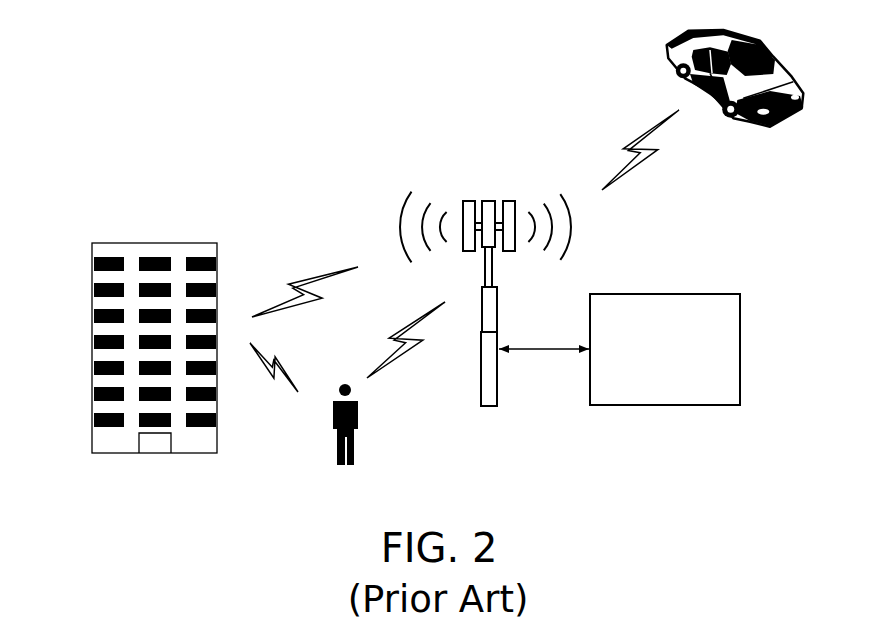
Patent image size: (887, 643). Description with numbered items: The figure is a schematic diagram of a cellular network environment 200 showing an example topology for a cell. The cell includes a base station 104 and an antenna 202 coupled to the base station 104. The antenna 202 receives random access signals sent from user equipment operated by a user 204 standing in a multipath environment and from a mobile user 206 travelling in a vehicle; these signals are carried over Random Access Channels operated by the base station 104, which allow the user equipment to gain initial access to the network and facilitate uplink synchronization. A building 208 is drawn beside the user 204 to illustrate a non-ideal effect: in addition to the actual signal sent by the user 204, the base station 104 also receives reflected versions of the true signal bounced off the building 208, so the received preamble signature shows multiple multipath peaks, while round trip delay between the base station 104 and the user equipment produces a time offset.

The cellular network environment 200 is at (232, 125).
The antenna 202 is at (485, 202).
The user 204 is at (359, 403).
The mobile user 206 is at (786, 70).
The building 208 is at (99, 244).
The base station 104 is at (649, 371).